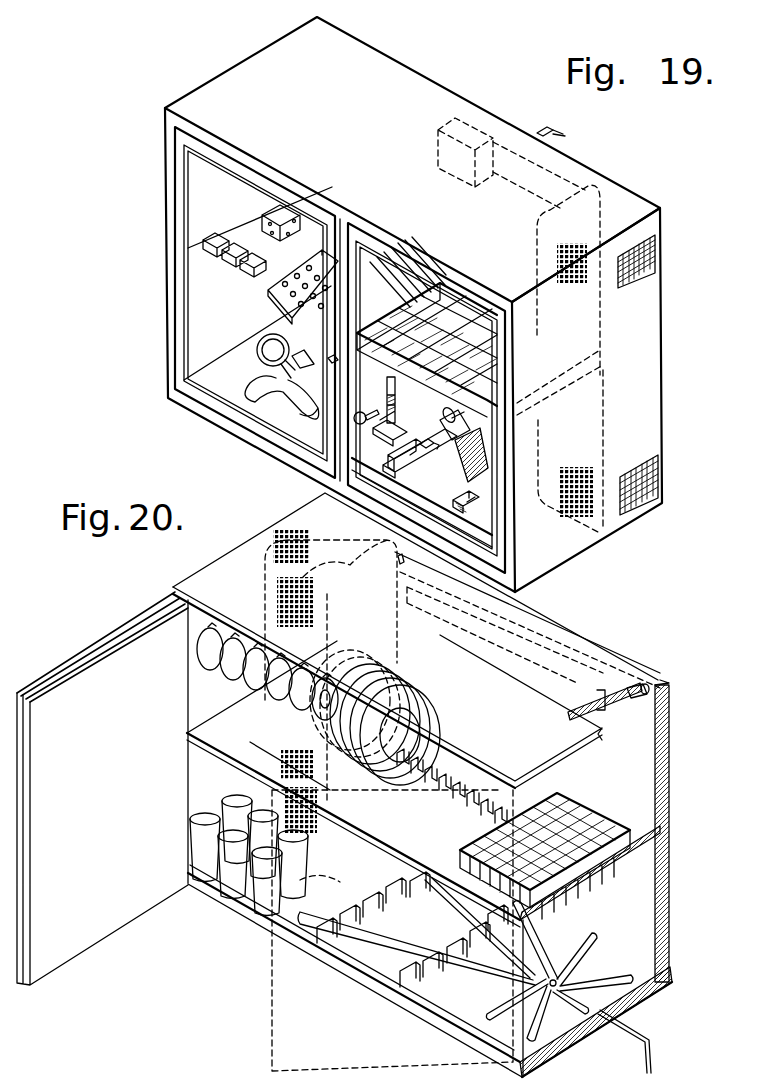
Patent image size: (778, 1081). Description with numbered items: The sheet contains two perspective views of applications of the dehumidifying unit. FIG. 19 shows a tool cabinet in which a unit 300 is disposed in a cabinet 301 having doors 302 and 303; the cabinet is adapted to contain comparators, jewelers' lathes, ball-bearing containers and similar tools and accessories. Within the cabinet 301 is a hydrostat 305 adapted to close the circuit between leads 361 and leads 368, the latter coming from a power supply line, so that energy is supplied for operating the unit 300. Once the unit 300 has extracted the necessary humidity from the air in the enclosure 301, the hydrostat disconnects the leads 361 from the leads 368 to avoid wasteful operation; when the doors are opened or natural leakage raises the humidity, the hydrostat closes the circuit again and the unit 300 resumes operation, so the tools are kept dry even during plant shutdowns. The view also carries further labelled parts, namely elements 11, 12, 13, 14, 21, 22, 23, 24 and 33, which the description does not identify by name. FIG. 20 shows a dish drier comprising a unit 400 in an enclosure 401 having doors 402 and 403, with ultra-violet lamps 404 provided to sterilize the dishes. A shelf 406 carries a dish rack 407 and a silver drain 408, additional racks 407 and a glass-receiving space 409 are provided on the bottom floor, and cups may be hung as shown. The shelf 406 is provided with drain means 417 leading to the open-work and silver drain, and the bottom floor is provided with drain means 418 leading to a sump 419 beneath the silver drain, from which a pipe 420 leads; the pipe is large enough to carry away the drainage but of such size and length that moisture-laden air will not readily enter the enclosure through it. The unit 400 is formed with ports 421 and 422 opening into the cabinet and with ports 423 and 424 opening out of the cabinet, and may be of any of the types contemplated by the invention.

In FIG. 19, the unit 300 is at (644, 333).
In FIG. 19, the cabinet 301 is at (386, 56).
In FIG. 19, the door 302 is at (307, 200).
In FIG. 19, the door 303 is at (380, 235).
In FIG. 19, the hydrostat 305 is at (477, 137).
In FIG. 19, the leads 361 is at (548, 130).
In FIG. 19, the leads 368 is at (556, 135).
In FIG. 19, the duct 14 is at (597, 178).
In FIG. 20, the duct 14 is at (330, 574).
In FIG. 19, the lower duct 13 is at (580, 520).
In FIG. 20, the lower duct 13 is at (335, 872).
In FIG. 19, the upper vent opening 22 is at (586, 286).
In FIG. 19, the lower vent opening 21 is at (580, 470).
In FIG. 19, the upper vent 24 is at (657, 245).
In FIG. 19, the lower vent 23 is at (658, 477).
In FIG. 19, the screen 33 is at (643, 257).
In FIG. 19, the side wall 11 is at (650, 370).
In FIG. 20, the heating coil 12 is at (395, 648).
In FIG. 20, the unit 400 is at (330, 647).
In FIG. 20, the enclosure 401 is at (657, 735).
In FIG. 20, the door 402 is at (65, 955).
In FIG. 20, the door 403 is at (272, 1052).
In FIG. 20, the ultra-violet lamps 404 is at (625, 692).
In FIG. 20, the shelf 406 is at (600, 810).
In FIG. 20, the dish rack 407 is at (462, 832).
In FIG. 20, the silver drain 408 is at (575, 800).
In FIG. 20, the glass-receiving space 409 is at (230, 880).
In FIG. 20, the drain means 417 is at (207, 660).
In FIG. 20, the drain means 418 is at (508, 980).
In FIG. 20, the sump 419 is at (570, 975).
In FIG. 20, the pipe 420 is at (646, 1045).
In FIG. 20, the port 421 is at (322, 792).
In FIG. 20, the port 422 is at (290, 580).
In FIG. 20, the port 423 is at (292, 762).
In FIG. 20, the port 424 is at (298, 535).